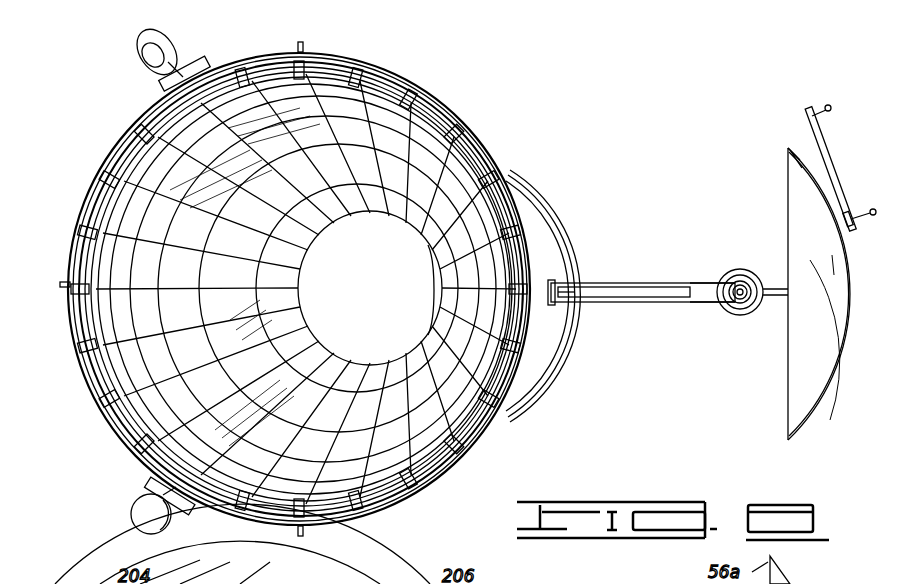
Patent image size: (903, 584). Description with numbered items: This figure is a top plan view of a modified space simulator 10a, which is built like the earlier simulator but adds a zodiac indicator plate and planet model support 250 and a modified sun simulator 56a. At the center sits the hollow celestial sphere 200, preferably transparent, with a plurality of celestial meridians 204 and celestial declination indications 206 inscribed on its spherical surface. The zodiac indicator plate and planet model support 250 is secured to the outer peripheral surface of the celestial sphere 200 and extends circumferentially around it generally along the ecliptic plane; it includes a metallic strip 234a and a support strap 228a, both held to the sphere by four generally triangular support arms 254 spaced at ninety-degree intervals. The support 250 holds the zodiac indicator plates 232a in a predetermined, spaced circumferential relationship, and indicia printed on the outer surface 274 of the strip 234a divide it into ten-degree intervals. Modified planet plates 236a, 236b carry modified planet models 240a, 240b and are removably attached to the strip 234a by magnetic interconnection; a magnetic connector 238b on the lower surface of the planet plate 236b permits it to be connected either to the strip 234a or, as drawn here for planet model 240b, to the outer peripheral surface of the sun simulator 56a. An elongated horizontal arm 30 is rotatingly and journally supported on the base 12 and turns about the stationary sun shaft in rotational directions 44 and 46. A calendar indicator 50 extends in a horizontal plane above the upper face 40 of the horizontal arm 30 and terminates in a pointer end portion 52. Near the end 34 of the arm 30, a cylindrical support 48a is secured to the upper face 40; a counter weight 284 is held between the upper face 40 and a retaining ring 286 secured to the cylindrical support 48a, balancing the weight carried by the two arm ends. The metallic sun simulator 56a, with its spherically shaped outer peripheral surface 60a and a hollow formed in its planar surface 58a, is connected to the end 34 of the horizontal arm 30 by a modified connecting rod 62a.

The modified space simulator 10a is at (418, 60).
The base 12 is at (538, 388).
The horizontal arm 30 is at (642, 303).
The end of horizontal arm 34 is at (720, 302).
The upper face of horizontal arm 40 is at (703, 290).
The rotational direction 44 is at (728, 372).
The rotational direction 46 is at (733, 238).
The cylindrical support 48a is at (740, 303).
The calendar indicator 50 is at (658, 293).
The pointer end portion 52 is at (563, 284).
The sun simulator 56a is at (788, 170).
The planar surface 58a is at (788, 418).
The spherically shaped outer peripheral surface 60a is at (814, 410).
The connecting rod 62a is at (790, 294).
The celestial sphere 200 is at (415, 128).
The celestial meridians 204 is at (128, 366).
The celestial declination indications 206 is at (290, 322).
The support strap 228a is at (410, 496).
The zodiac indicator plates 232a is at (255, 54).
The strip 234a is at (457, 128).
The planet plate 236a is at (190, 70).
The planet plate 236b is at (186, 502).
The connector 238b is at (845, 214).
The planet model 240a is at (150, 44).
The planet model 240b is at (134, 517).
The zodiac indicator plate and planet model support 250 is at (503, 135).
The support arms 254 is at (308, 46).
The outer surface of strip 274 is at (375, 512).
The counter weight 284 is at (750, 276).
The retaining ring 286 is at (748, 302).